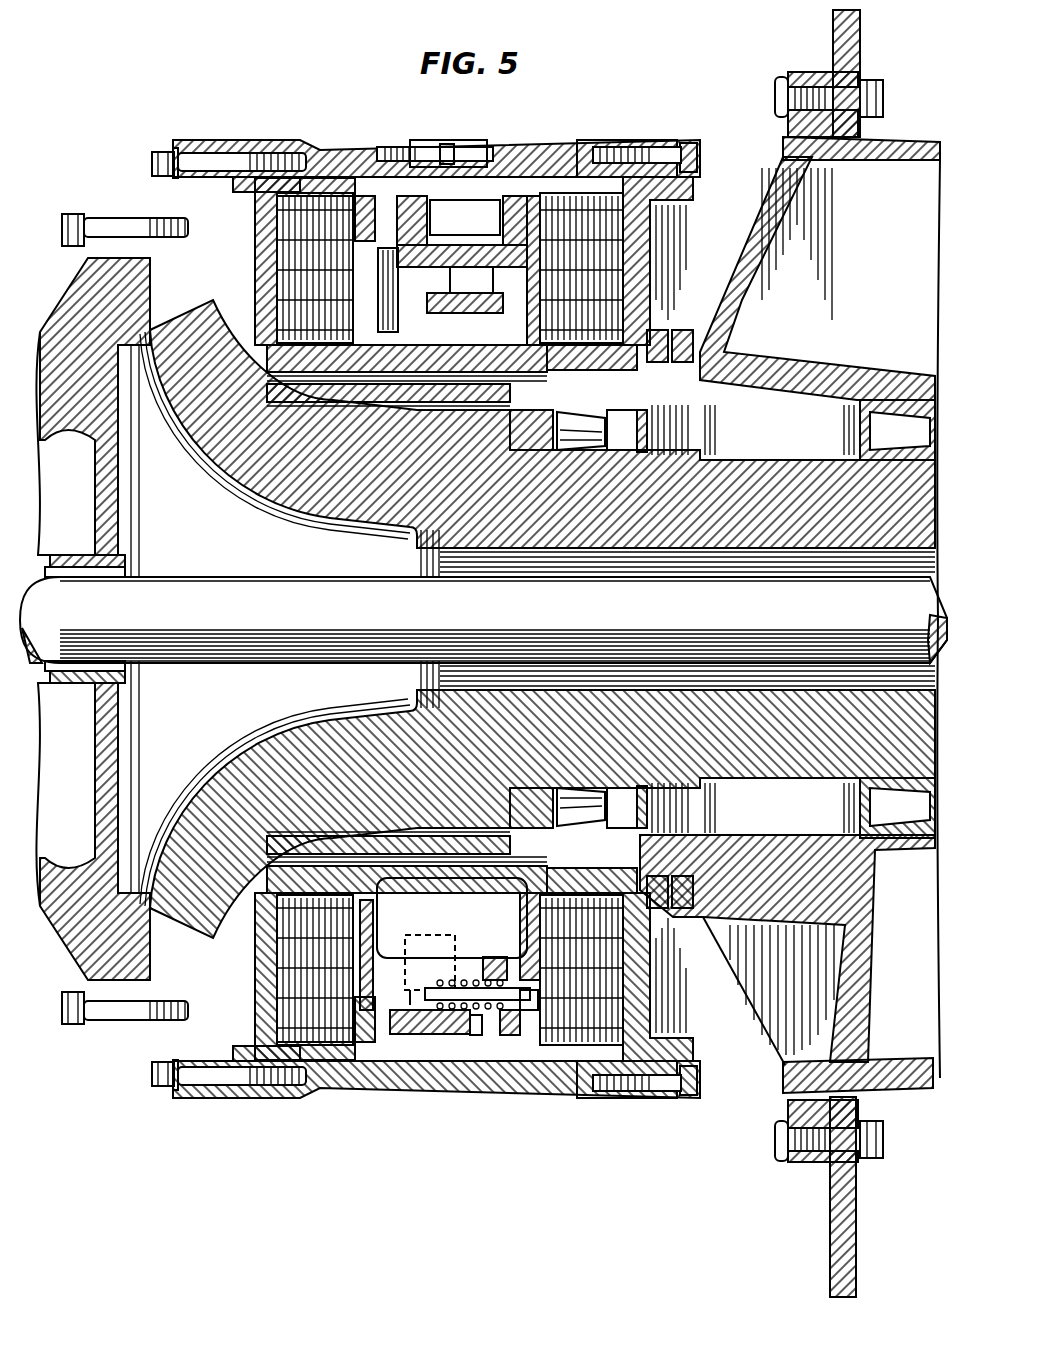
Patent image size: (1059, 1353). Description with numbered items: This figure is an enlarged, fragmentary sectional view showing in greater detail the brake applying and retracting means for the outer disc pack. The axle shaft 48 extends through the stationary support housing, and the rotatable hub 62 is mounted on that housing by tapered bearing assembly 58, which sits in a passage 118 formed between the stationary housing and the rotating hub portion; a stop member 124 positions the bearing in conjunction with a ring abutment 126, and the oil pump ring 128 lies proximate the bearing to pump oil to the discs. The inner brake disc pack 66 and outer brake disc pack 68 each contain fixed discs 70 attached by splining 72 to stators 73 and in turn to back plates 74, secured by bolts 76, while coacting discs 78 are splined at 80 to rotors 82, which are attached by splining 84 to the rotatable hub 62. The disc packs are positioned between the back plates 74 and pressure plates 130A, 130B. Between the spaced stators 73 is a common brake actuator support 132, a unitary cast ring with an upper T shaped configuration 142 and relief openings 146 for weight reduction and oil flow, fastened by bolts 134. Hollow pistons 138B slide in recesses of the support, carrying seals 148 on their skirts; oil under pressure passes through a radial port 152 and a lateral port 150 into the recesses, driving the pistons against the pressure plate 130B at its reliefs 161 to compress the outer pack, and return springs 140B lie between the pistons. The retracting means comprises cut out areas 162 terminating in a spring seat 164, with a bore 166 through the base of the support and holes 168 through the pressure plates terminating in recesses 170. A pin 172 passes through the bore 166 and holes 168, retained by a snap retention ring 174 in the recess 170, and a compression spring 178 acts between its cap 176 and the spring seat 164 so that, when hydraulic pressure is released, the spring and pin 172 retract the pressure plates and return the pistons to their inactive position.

The axle shaft 48 is at (236, 620).
The tapered bearing assembly 58 is at (580, 452).
The rotatable hub 62 is at (362, 392).
The inner brake disc pack 66 is at (343, 192).
The outer brake disc pack 68 is at (600, 134).
The fixed discs 70 is at (322, 150).
The splining 72 is at (367, 182).
The stators 73 is at (272, 142).
The back plates 74 is at (214, 147).
The bolts 76 is at (172, 148).
The coacting discs 78 is at (282, 362).
The splining 80 is at (310, 372).
The rotors 82 is at (467, 350).
The splining 84 is at (336, 372).
The passage 118 is at (452, 420).
The stop member 124 is at (512, 452).
The ring abutment 126 is at (650, 362).
The oil pump ring 128 is at (645, 442).
The pressure plate 130A is at (408, 200).
The pressure plate 130B is at (500, 268).
The common brake actuator support 132 is at (462, 140).
The bolts 134 is at (510, 196).
The pistons 138B is at (398, 300).
The return springs 140B is at (404, 1036).
The T shaped configuration 142 is at (530, 196).
The relief openings 146 is at (370, 1060).
The seals 148 is at (440, 305).
The lateral port 150 is at (450, 285).
The radial port 152 is at (438, 146).
The reliefs 161 is at (465, 217).
The cut out areas 162 is at (460, 960).
The spring seat 164 is at (490, 958).
The bore 166 is at (478, 1036).
The holes 168 is at (525, 950).
The recesses 170 is at (512, 1036).
The pin 172 is at (458, 1040).
The snap retention ring 174 is at (535, 1010).
The cap 176 is at (430, 962).
The compression spring 178 is at (427, 984).